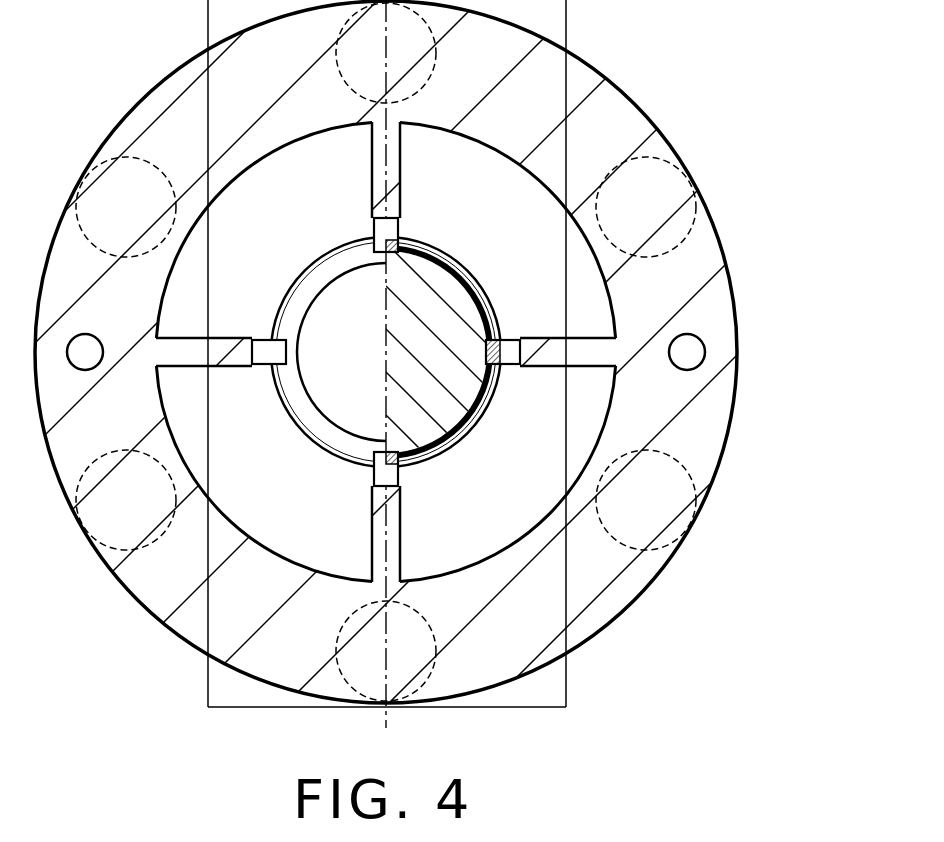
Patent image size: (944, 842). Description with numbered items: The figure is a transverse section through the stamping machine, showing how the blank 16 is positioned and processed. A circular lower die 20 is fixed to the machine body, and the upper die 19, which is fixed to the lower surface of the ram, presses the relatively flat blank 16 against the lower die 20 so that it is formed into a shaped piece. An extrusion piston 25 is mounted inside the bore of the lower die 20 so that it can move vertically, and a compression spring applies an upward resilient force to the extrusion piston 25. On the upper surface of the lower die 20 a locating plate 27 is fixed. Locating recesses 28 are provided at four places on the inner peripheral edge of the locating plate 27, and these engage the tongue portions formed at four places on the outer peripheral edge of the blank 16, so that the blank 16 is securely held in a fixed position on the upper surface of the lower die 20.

The blank 16 is at (495, 367).
The upper die 19 is at (465, 385).
The lower die 20 is at (482, 535).
The extrusion piston 25 is at (327, 380).
The locating plate 27 is at (713, 237).
The locating recesses 28 is at (510, 343).